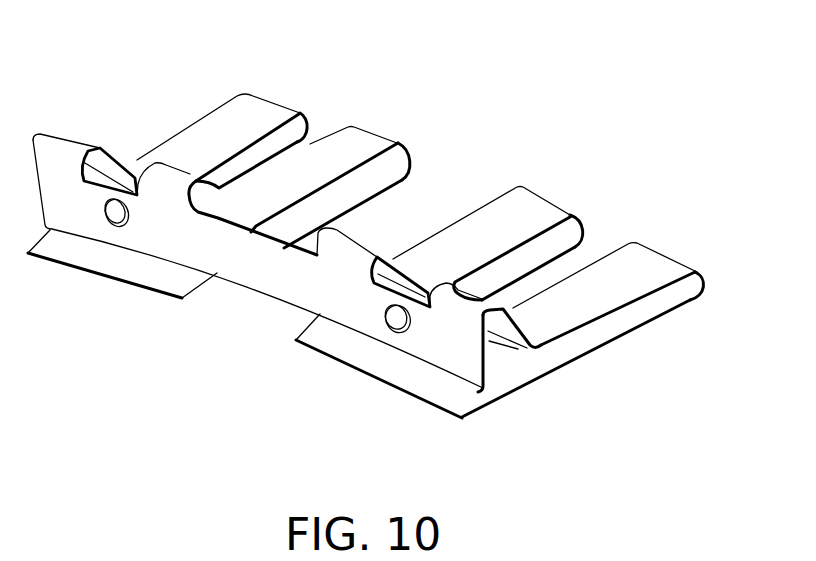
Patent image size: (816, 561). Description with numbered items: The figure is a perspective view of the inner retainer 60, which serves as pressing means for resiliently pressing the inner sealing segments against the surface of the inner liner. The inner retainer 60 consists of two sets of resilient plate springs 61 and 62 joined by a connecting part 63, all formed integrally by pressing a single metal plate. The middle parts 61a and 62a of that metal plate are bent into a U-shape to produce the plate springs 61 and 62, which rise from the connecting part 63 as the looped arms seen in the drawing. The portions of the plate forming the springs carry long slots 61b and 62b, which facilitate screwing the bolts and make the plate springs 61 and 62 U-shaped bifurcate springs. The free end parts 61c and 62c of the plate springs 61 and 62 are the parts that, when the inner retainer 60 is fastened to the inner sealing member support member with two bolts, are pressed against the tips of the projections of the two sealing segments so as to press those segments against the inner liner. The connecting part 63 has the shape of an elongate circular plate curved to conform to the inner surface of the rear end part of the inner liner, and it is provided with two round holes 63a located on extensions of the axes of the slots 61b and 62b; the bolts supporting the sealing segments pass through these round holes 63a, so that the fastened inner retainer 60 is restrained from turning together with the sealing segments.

The inner retainer 60 is at (697, 48).
The plate spring 61 is at (300, 149).
The middle part 61a is at (408, 138).
The long slot 61b is at (318, 127).
The free end part 61c is at (75, 252).
The plate spring 62 is at (572, 283).
The middle part 62a is at (697, 272).
The long slot 62b is at (603, 233).
The free end part 62c is at (345, 350).
The connecting part 63 is at (245, 282).
The round hole 63a is at (130, 212).